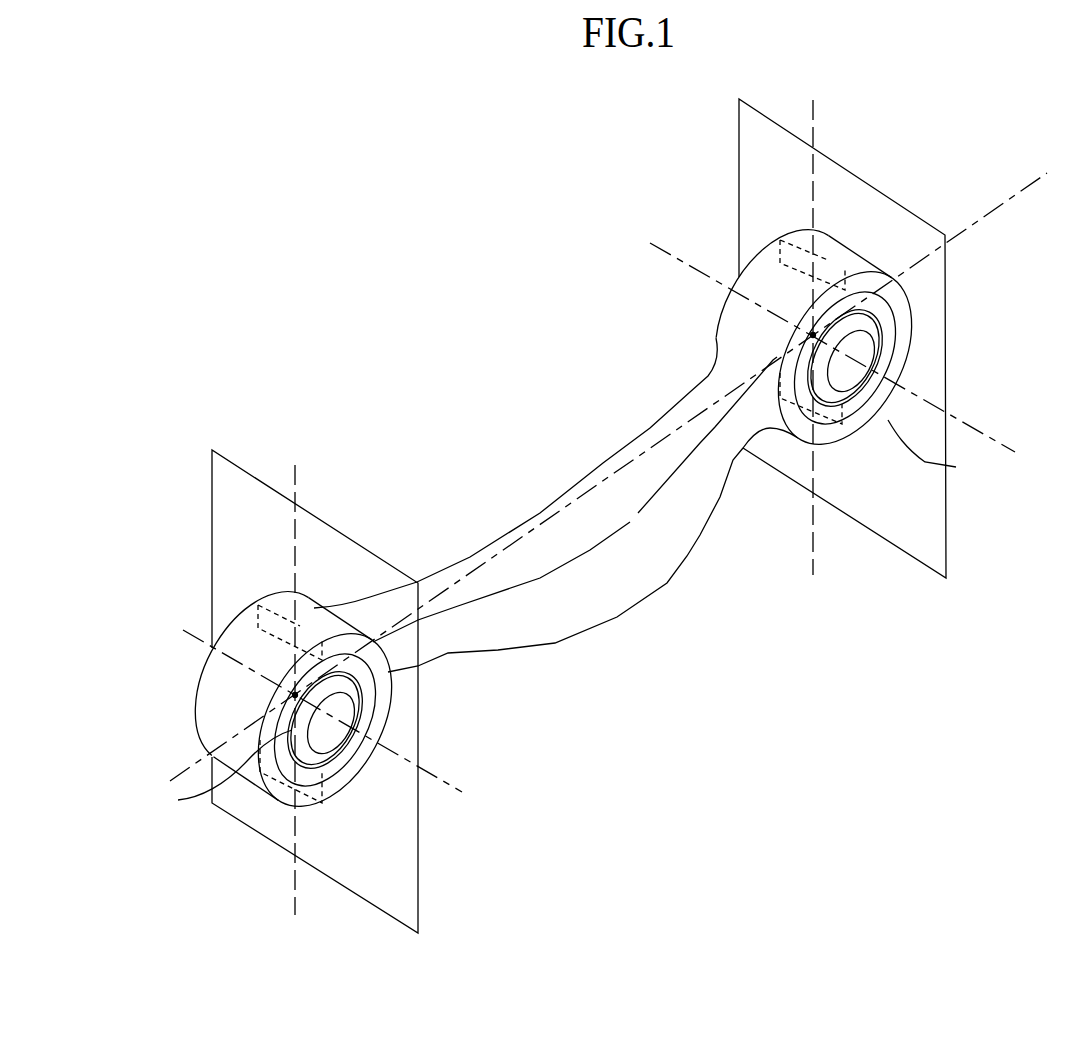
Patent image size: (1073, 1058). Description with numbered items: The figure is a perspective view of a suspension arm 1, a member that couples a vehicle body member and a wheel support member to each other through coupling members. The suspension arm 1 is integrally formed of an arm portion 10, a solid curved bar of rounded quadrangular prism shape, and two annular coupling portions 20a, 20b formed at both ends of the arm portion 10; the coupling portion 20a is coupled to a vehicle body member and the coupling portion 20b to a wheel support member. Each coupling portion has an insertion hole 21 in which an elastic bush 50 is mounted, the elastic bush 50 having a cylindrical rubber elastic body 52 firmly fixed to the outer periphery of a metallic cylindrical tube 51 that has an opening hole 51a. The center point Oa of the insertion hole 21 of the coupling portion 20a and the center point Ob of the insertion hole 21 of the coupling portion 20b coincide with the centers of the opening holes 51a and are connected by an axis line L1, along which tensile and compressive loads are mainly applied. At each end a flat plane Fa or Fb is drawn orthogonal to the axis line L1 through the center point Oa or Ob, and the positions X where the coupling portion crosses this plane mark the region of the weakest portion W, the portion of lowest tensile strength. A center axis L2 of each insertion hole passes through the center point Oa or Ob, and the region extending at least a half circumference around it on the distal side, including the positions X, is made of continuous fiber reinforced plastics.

The suspension arm 1 is at (472, 410).
The arm portion 10 is at (570, 623).
The coupling portion 20a is at (762, 265).
The coupling portion 20b is at (240, 640).
The insertion hole 21 is at (887, 325).
The elastic bush 50 is at (886, 302).
The cylindrical tube 51 is at (880, 340).
The opening hole 51a is at (880, 378).
The cylindrical rubber elastic body 52 is at (567, 616).
The flat plane Fa is at (921, 232).
The flat plane Fb is at (246, 486).
The axis line L1 is at (458, 582).
The center axis L2 is at (995, 445).
The weakest portion W is at (833, 266).
The position X is at (795, 247).
The center point Oa is at (811, 335).
The center point Ob is at (293, 696).